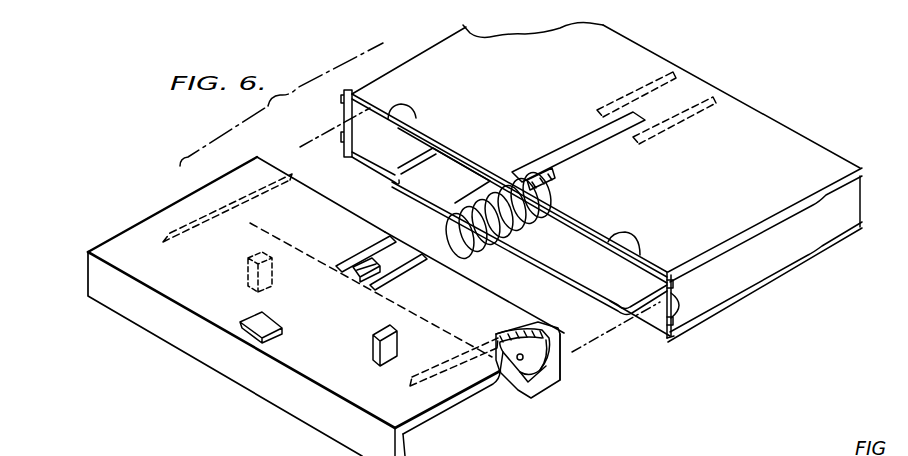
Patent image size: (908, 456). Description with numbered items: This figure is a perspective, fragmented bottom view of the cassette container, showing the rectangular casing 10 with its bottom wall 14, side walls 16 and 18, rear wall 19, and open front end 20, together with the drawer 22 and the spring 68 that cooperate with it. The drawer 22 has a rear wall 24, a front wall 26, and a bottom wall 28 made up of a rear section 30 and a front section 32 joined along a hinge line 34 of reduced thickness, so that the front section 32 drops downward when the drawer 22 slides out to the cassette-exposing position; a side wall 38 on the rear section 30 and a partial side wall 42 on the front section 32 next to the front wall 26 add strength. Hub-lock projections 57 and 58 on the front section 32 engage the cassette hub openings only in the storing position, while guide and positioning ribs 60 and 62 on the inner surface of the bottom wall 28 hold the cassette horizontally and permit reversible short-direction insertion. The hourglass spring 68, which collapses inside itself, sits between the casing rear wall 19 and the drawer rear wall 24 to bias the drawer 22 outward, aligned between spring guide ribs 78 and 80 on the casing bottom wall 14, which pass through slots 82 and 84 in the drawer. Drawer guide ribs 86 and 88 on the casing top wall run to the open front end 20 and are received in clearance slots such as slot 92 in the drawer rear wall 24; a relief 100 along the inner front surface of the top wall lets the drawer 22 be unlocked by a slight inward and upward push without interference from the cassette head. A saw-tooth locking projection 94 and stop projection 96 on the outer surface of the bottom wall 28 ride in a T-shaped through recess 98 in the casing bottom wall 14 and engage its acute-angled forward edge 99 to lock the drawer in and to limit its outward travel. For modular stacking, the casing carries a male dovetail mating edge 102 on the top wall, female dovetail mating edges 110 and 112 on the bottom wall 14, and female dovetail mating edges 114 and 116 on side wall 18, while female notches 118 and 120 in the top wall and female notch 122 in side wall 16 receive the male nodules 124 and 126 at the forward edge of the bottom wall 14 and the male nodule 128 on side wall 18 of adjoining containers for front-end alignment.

The casing 10 is at (831, 155).
The bottom wall 14 is at (770, 143).
The side wall 16 is at (415, 57).
The side wall 18 is at (771, 252).
The rear wall 19 is at (740, 106).
The open front end 20 is at (590, 284).
The drawer 22 is at (236, 382).
The rear wall 24 is at (565, 358).
The front wall 26 is at (273, 385).
The bottom wall 28 is at (346, 373).
The rear section 30 is at (489, 309).
The front section 32 is at (437, 393).
The hinge line 34 is at (371, 290).
The side wall 38 is at (522, 388).
The partial side wall 42 is at (402, 434).
The hub-lock projection 57 is at (269, 282).
The hub-lock projection 58 is at (391, 349).
The guide and positioning rib 60 is at (197, 230).
The guide and positioning rib 62 is at (410, 382).
The spring 68 is at (447, 233).
The guide rib 78 is at (622, 98).
The guide rib 80 is at (655, 134).
The slot 82 is at (361, 252).
The slot 84 is at (396, 276).
The rib 86 is at (425, 160).
The rib 88 is at (641, 300).
The clearance slot 92 is at (521, 356).
The locking projection 94 is at (274, 322).
The stop projection 96 is at (393, 273).
The recess 98 is at (597, 142).
The forward edge 99 is at (522, 173).
The relief 100 is at (543, 247).
The mating edge 102 is at (668, 340).
The mating edge 110 is at (664, 272).
The mating edge 112 is at (357, 97).
The mating edge 114 is at (676, 322).
The mating edge 116 is at (675, 285).
The female notch 118 is at (390, 183).
The female notch 120 is at (624, 312).
The female notch 122 is at (344, 121).
The male nodule 124 is at (418, 113).
The male nodule 126 is at (627, 240).
The male nodule 128 is at (683, 304).